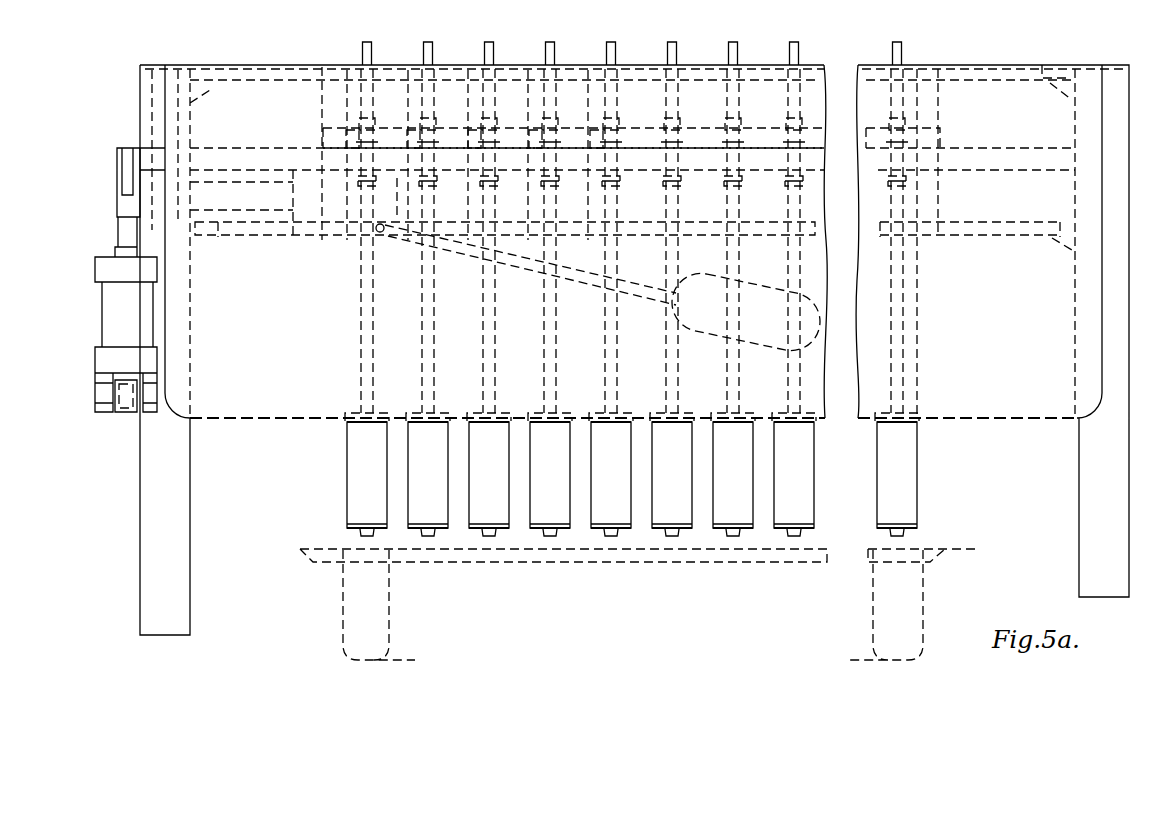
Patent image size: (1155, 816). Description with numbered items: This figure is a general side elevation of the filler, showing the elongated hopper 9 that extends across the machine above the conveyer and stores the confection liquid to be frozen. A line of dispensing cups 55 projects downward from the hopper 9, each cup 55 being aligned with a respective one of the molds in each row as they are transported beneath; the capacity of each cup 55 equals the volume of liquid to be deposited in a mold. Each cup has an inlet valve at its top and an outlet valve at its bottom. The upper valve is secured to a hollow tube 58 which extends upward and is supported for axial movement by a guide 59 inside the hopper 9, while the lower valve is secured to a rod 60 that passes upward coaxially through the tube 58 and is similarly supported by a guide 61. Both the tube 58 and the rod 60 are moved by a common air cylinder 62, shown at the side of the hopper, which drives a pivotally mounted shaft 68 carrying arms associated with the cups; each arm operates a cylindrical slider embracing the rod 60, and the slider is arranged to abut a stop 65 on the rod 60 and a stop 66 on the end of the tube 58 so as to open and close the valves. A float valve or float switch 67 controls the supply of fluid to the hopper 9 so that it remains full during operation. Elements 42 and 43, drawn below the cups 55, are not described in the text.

The hopper 9 is at (984, 419).
The support plate 42 is at (580, 563).
The pin 43 is at (392, 608).
The dispensing cup 55 is at (356, 481).
The hollow tube 58 is at (614, 313).
The guide 59 is at (643, 236).
The rod 60 is at (423, 57).
The guide 61 is at (533, 81).
The air cylinder 62 is at (123, 321).
The stop 65 is at (480, 121).
The stop 66 is at (604, 178).
The float valve or float switch 67 is at (397, 197).
The pivotally mounted shaft 68 is at (296, 147).